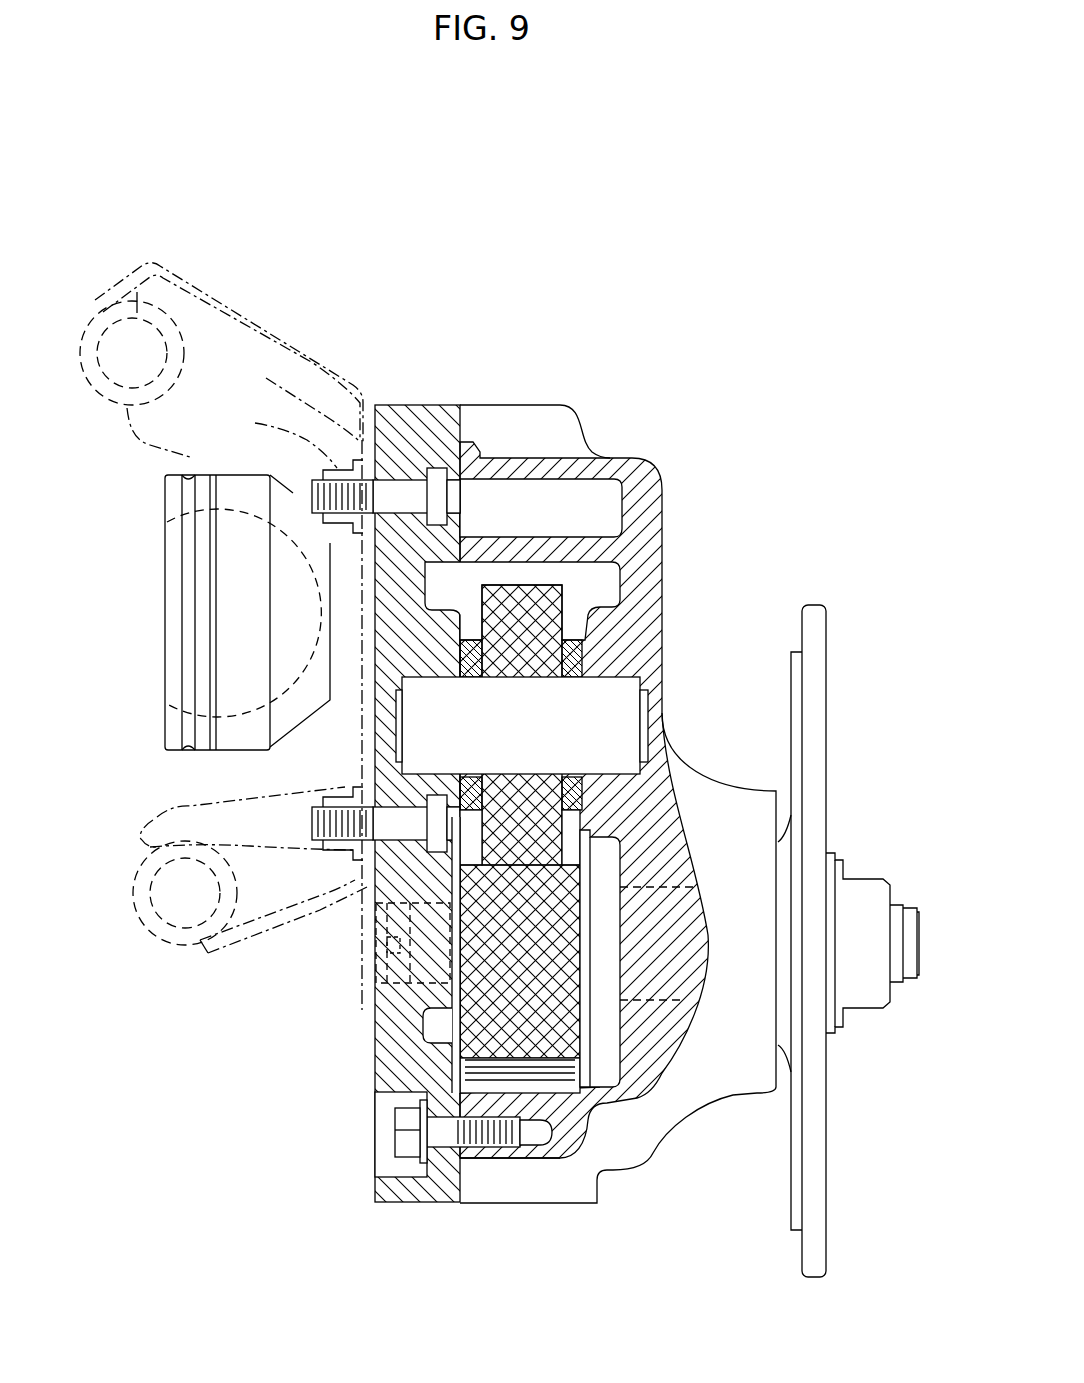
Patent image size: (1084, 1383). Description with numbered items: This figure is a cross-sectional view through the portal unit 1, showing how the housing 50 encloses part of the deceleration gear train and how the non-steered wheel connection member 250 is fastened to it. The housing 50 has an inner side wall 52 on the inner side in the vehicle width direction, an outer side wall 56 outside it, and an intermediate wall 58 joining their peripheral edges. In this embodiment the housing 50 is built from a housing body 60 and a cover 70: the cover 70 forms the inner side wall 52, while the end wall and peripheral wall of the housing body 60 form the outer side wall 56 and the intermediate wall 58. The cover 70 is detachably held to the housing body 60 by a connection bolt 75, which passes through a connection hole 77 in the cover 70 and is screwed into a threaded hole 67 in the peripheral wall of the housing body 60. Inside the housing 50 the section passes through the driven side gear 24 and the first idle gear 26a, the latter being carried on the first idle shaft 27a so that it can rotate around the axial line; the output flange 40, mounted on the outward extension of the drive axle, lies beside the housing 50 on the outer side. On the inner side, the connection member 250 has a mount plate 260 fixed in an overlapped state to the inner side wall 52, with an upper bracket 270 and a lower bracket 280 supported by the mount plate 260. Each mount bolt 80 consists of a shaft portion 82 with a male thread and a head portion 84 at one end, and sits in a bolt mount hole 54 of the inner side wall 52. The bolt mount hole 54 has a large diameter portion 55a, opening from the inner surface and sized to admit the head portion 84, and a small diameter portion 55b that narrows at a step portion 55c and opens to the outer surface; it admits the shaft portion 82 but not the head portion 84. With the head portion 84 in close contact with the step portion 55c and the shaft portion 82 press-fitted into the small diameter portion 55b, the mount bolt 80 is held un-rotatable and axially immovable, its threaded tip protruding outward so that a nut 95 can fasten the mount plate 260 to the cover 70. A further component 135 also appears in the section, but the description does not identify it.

The portal unit 1 is at (691, 296).
The driven side gear 24 is at (557, 1035).
The first idle gear 26a is at (547, 598).
The first idle shaft 27a is at (628, 708).
The output flange 40 is at (813, 699).
The housing 50 is at (504, 318).
The inner side wall 52 is at (355, 1069).
The bolt mount hole 54 is at (458, 503).
The large diameter portion 55a is at (460, 538).
The small diameter portion 55b is at (330, 548).
The step portion 55c is at (418, 535).
The outer side wall 56 is at (672, 611).
The intermediate wall 58 is at (553, 1167).
The housing body 60 is at (585, 400).
The threaded hole 67 is at (509, 1148).
The cover 70 is at (346, 1041).
The connection bolt 75 is at (405, 1143).
The connection hole 77 is at (437, 1164).
The mount bolt 80 is at (403, 470).
The shaft portion 82 is at (383, 500).
The head portion 84 is at (437, 493).
The nut 95 is at (251, 629).
The shock absorber mount 135 is at (233, 499).
The non-steered wheel connection member 250 is at (247, 302).
The mount plate 260 is at (243, 411).
The upper bracket 270 is at (143, 263).
The lower bracket 280 is at (182, 928).